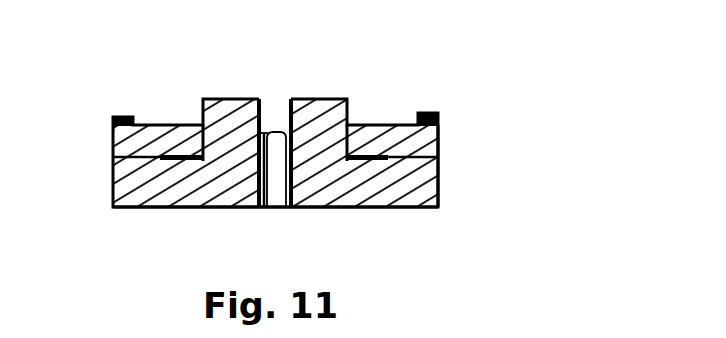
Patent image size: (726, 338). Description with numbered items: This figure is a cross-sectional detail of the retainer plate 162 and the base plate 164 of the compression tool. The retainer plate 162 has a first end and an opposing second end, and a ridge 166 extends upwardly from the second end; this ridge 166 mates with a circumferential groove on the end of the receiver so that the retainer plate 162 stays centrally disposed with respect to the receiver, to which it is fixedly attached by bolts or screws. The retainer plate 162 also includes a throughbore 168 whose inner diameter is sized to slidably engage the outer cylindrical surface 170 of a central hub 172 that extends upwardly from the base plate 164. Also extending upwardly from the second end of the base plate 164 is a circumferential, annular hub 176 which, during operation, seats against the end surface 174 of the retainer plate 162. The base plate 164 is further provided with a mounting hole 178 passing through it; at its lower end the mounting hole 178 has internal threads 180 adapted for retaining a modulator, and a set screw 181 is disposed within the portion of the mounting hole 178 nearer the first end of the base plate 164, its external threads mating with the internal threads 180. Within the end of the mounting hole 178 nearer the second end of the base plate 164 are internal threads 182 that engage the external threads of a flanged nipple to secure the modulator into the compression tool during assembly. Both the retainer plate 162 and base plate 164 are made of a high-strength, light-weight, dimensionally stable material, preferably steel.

The retainer plate 162 is at (437, 100).
The base plate 164 is at (322, 88).
The ridge 166 is at (118, 118).
The throughbore 168 is at (212, 136).
The outer cylindrical surface 170 is at (438, 120).
The central hub 172 is at (254, 97).
The end surface 174 is at (117, 178).
The annular hub 176 is at (430, 143).
The mounting hole 178 is at (288, 97).
The internal threads 180 is at (281, 185).
The set screw 181 is at (274, 180).
The internal threads 182 is at (352, 116).